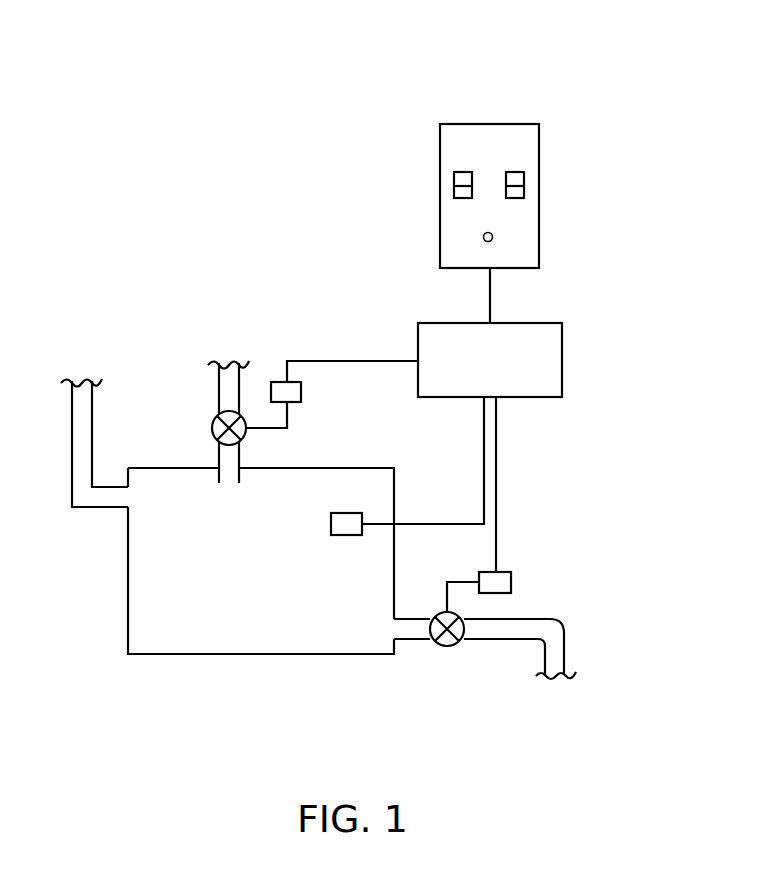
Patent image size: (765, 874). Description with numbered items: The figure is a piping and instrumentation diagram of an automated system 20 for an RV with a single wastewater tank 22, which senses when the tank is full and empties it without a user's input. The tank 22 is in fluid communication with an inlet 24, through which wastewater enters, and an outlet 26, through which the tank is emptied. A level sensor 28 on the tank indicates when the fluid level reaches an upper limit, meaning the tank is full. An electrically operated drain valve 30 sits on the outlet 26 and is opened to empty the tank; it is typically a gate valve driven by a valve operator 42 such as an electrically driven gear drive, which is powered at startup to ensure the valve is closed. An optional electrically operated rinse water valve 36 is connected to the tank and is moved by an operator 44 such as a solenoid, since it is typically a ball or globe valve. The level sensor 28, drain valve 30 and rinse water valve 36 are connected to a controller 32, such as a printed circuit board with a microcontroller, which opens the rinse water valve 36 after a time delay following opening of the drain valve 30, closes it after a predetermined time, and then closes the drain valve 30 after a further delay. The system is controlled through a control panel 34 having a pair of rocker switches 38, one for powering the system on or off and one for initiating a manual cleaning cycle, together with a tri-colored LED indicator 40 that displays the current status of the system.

The automated system 20 is at (225, 146).
The wastewater tank 22 is at (128, 602).
The inlet 24 is at (82, 388).
The outlet 26 is at (567, 657).
The level sensor 28 is at (345, 513).
The drain valve 30 is at (447, 646).
The controller 32 is at (562, 358).
The control panel 34 is at (490, 122).
The rinse water valve 36 is at (212, 428).
The rocker switches 38 is at (454, 193).
The tri-colored LED indicator 40 is at (494, 236).
The valve operator 42 is at (511, 583).
The valve operator 44 is at (276, 382).